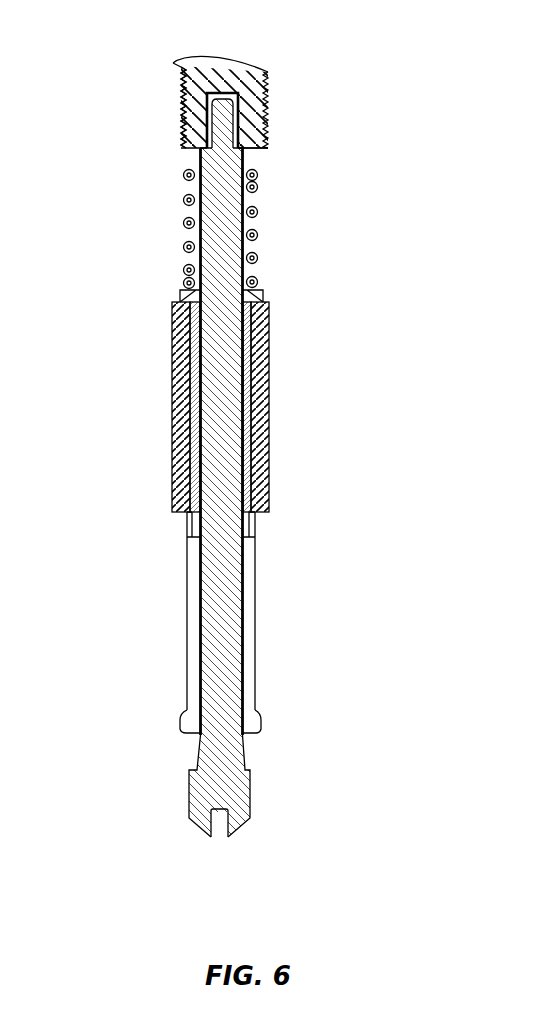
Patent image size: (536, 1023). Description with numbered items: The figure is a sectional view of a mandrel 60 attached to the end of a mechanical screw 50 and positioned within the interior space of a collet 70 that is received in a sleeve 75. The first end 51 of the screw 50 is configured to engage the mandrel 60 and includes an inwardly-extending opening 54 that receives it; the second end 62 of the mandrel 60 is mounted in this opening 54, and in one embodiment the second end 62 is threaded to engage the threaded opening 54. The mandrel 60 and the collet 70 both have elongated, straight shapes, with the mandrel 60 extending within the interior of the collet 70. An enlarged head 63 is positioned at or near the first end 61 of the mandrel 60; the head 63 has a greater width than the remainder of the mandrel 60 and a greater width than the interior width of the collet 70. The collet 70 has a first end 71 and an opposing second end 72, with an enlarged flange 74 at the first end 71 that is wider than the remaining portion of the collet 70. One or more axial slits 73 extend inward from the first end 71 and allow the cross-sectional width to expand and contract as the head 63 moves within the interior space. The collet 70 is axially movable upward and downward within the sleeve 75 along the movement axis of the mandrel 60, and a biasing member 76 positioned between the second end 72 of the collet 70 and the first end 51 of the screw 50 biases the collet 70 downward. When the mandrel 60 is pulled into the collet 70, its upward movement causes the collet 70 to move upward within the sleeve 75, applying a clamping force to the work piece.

The screw 50 is at (242, 78).
The first end 51 is at (250, 152).
The inwardly-extending opening 54 is at (197, 103).
The second end 62 is at (220, 107).
The mandrel 60 is at (238, 492).
The first end 61 is at (228, 837).
The enlarged head 63 is at (198, 800).
The collet 70 is at (248, 535).
The first end 71 is at (186, 733).
The second end 72 is at (256, 297).
The axial slits 73 is at (250, 560).
The enlarged flange 74 is at (250, 724).
The sleeve 75 is at (269, 357).
The biasing member 76 is at (258, 210).